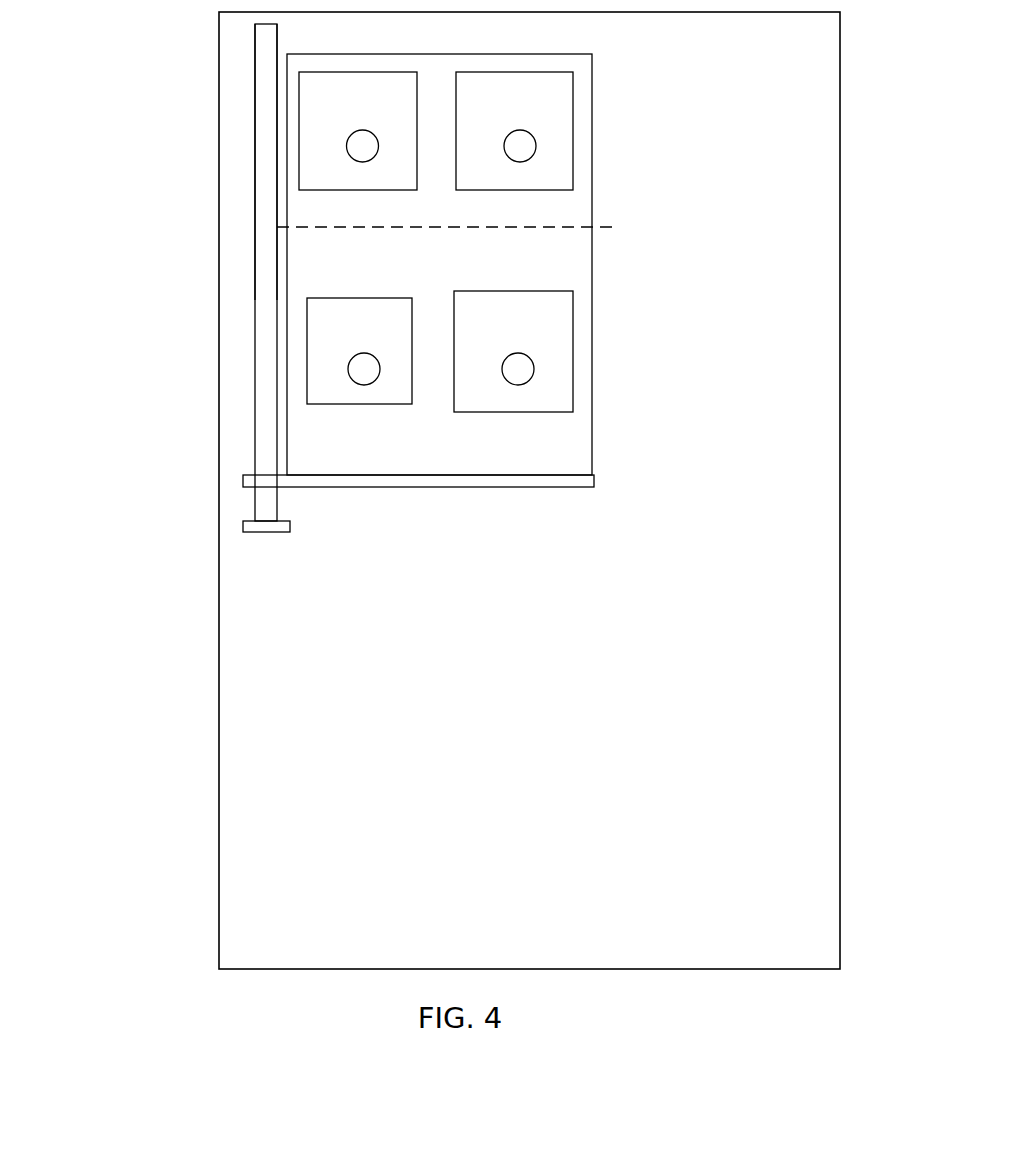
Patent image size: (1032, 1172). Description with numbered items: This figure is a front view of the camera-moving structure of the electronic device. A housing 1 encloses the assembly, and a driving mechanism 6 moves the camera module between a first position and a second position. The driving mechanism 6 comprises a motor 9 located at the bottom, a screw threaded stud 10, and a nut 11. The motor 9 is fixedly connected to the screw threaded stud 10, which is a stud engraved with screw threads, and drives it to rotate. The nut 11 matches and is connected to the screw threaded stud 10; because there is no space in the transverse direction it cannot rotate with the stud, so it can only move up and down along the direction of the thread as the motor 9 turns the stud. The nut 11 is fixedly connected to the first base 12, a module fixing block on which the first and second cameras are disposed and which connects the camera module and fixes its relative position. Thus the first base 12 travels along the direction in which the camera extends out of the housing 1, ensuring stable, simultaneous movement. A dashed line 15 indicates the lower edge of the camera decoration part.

The housing 1 is at (840, 490).
The driving mechanism 6 is at (255, 310).
The motor 9 is at (243, 525).
The screw threaded stud 10 is at (260, 248).
The nut 11 is at (243, 478).
The first base 12 is at (592, 144).
The lower edge of the camera decoration part 15 is at (325, 226).